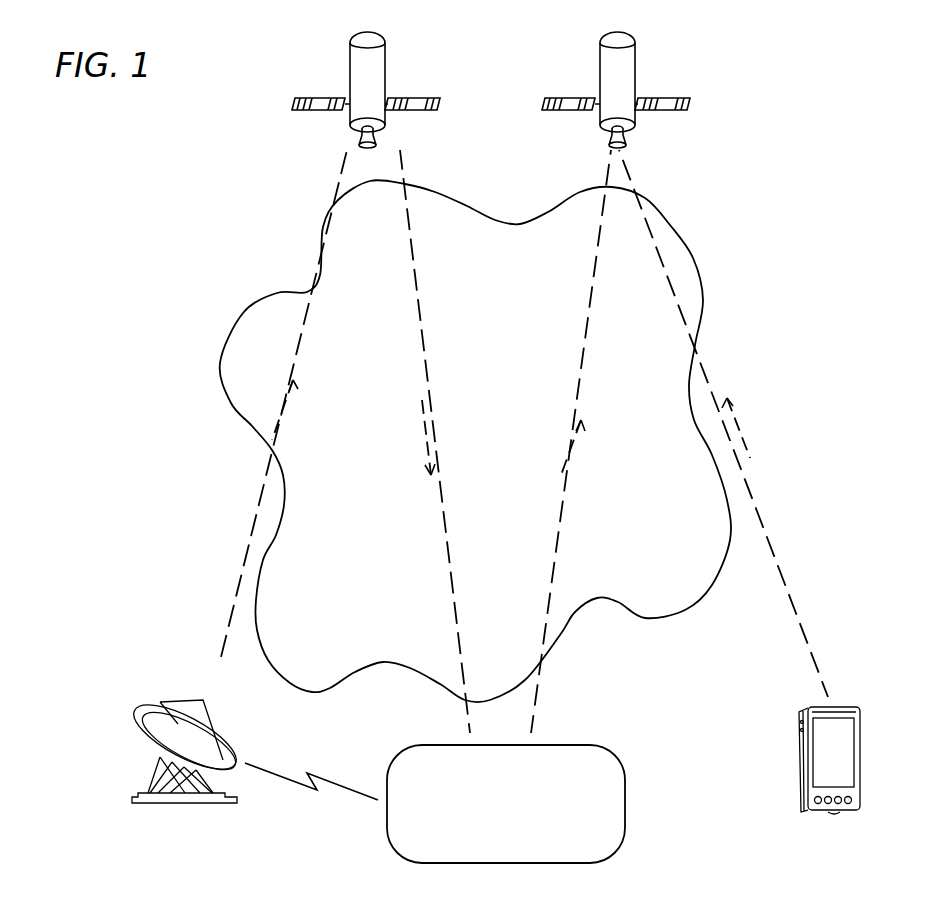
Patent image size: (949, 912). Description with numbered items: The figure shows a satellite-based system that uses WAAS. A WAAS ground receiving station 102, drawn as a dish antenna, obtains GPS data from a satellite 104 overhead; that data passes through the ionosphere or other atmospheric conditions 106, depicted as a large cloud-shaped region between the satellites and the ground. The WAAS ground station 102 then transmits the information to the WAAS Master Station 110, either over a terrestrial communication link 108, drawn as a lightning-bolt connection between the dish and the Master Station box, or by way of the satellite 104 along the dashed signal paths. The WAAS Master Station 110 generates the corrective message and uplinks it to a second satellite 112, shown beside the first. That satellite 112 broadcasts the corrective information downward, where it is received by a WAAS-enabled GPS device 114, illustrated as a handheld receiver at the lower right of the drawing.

The WAAS ground receiving station 102 is at (237, 805).
The satellite 104 is at (385, 53).
The ionosphere or other atmospheric conditions 106 is at (701, 278).
The terrestrial communication 108 is at (322, 770).
The WAAS Master Station 110 is at (625, 805).
The satellite 112 is at (635, 53).
The WAAS-enabled GPS device 114 is at (860, 740).